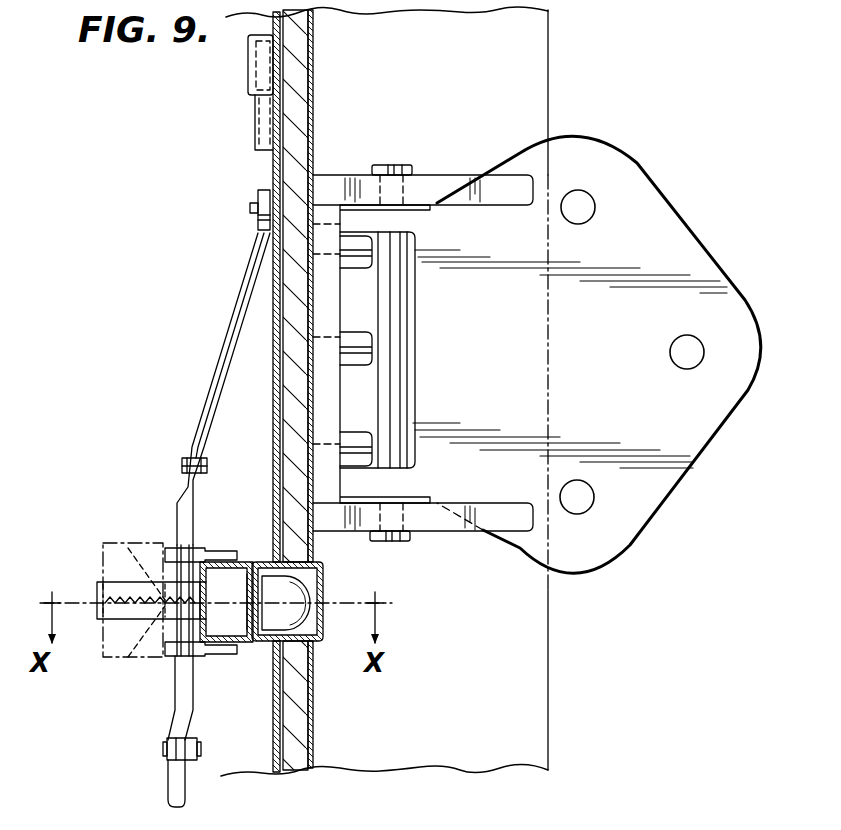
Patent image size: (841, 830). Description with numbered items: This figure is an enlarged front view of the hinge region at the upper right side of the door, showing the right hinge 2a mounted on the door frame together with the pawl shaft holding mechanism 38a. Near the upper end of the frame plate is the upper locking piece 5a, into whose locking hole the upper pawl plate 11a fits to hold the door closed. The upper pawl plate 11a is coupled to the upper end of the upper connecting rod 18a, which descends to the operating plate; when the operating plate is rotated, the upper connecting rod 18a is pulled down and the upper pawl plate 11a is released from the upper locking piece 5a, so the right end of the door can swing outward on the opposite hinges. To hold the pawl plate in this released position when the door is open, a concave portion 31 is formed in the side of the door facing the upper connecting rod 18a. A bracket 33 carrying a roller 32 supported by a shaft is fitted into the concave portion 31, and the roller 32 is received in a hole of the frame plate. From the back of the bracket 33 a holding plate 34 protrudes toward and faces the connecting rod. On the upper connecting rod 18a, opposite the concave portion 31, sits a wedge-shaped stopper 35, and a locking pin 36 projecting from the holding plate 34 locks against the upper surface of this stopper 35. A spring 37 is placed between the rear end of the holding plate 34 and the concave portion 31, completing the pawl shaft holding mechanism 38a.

The right hinge 2a is at (437, 130).
The upper locking piece 5a is at (268, 65).
The upper pawl plate 11a is at (235, 234).
The upper connecting rod 18a is at (180, 503).
The concave portion 31 is at (256, 562).
The roller 32 is at (320, 632).
The bracket 33 is at (260, 645).
The holding plate 34 is at (238, 643).
The wedge-shaped stopper 35 is at (165, 586).
The locking pin 36 is at (150, 588).
The spring 37 is at (148, 652).
The pawl shaft holding mechanism 38a is at (86, 644).